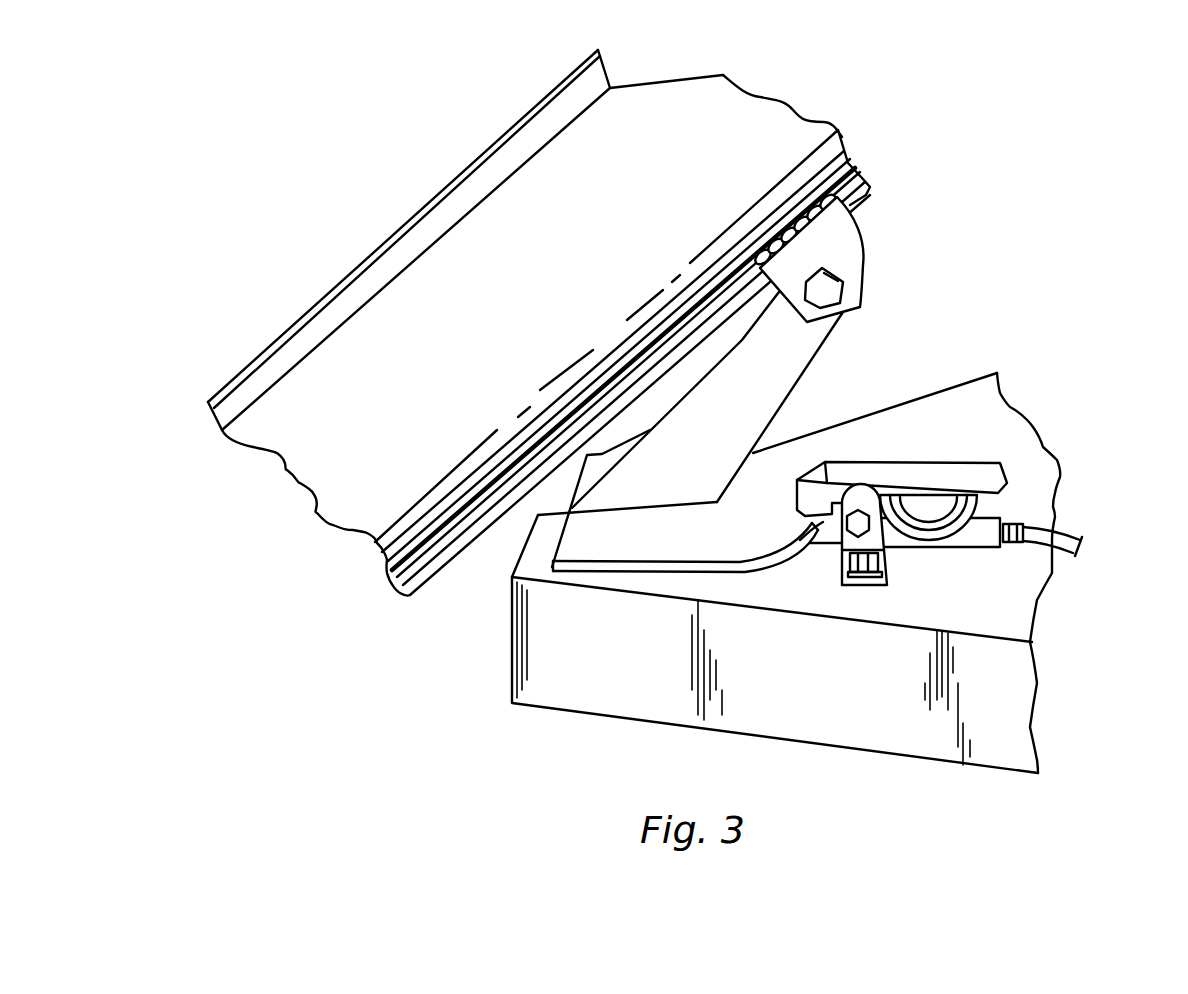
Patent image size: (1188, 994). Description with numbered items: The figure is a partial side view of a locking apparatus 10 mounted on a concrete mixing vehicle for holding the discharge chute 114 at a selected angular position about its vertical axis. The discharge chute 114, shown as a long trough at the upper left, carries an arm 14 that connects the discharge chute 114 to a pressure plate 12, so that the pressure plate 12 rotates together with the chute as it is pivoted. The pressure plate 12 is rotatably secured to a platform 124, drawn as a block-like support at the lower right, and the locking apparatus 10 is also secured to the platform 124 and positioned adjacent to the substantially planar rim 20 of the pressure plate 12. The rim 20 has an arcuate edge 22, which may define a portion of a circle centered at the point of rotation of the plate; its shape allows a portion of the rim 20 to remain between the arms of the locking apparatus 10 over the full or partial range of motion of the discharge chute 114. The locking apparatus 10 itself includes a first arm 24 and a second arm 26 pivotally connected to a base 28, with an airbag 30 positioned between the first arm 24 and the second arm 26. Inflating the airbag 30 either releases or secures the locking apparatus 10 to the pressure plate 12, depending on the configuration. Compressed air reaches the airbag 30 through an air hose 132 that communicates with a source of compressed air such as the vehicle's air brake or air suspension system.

The locking apparatus 10 is at (850, 521).
The pressure plate 12 is at (774, 497).
The arm 14 is at (771, 361).
The rim 20 is at (805, 524).
The arcuate edge 22 is at (823, 522).
The first arm 24 is at (817, 495).
The second arm 26 is at (820, 548).
The base 28 is at (876, 578).
The airbag 30 is at (980, 503).
The discharge chute 114 is at (480, 237).
The platform 124 is at (869, 603).
The air hose 132 is at (1050, 513).